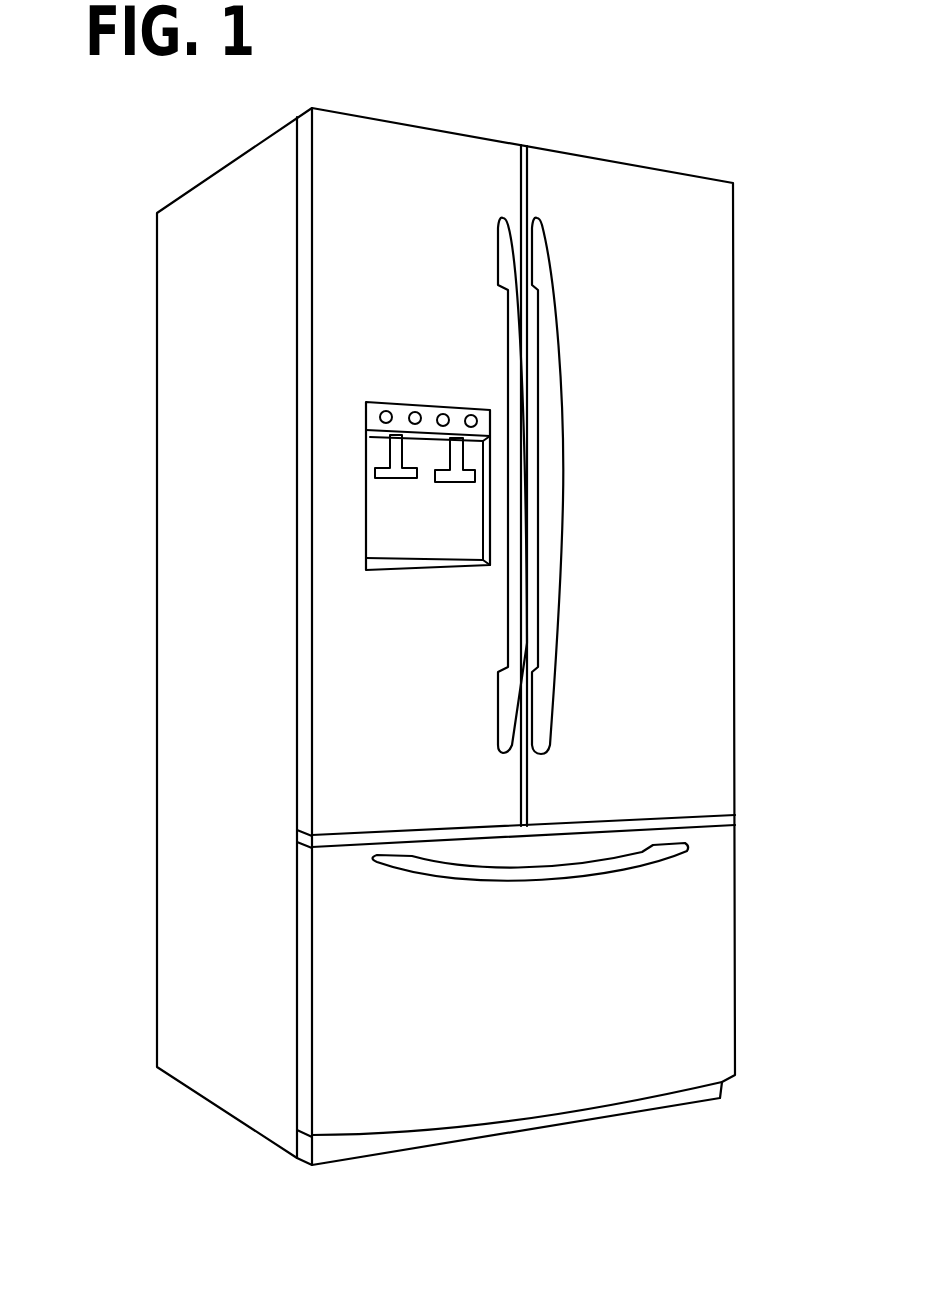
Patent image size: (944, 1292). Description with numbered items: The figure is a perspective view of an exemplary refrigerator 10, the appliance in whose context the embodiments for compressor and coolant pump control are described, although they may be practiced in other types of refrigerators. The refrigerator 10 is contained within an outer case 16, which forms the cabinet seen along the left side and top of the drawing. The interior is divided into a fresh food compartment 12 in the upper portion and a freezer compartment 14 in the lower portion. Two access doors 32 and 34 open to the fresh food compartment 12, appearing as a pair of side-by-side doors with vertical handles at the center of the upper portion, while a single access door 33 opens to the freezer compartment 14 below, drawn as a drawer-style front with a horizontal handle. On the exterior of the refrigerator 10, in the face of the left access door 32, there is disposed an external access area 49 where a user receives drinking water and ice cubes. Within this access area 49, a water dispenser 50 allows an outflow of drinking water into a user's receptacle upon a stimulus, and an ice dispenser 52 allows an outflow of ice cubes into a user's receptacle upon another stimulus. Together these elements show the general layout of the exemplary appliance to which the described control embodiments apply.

The refrigerator 10 is at (633, 124).
The fresh food compartment 12 is at (770, 192).
The freezer compartment 14 is at (770, 820).
The outer case 16 is at (146, 297).
The access door 32 is at (422, 251).
The access door 33 is at (552, 995).
The access door 34 is at (662, 266).
The external access area 49 is at (440, 572).
The water dispenser 50 is at (457, 480).
The ice dispenser 52 is at (375, 469).